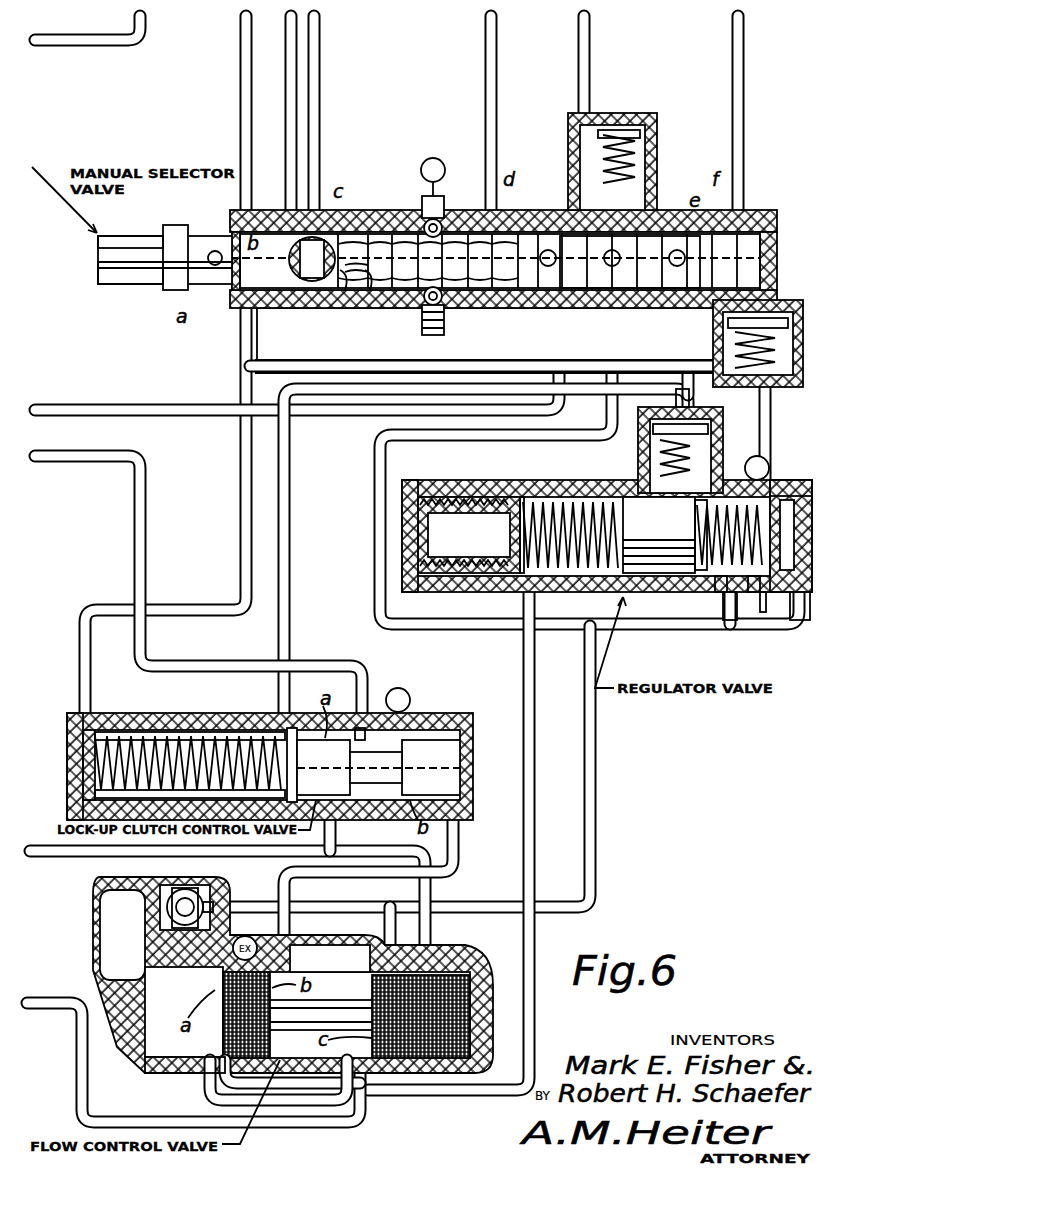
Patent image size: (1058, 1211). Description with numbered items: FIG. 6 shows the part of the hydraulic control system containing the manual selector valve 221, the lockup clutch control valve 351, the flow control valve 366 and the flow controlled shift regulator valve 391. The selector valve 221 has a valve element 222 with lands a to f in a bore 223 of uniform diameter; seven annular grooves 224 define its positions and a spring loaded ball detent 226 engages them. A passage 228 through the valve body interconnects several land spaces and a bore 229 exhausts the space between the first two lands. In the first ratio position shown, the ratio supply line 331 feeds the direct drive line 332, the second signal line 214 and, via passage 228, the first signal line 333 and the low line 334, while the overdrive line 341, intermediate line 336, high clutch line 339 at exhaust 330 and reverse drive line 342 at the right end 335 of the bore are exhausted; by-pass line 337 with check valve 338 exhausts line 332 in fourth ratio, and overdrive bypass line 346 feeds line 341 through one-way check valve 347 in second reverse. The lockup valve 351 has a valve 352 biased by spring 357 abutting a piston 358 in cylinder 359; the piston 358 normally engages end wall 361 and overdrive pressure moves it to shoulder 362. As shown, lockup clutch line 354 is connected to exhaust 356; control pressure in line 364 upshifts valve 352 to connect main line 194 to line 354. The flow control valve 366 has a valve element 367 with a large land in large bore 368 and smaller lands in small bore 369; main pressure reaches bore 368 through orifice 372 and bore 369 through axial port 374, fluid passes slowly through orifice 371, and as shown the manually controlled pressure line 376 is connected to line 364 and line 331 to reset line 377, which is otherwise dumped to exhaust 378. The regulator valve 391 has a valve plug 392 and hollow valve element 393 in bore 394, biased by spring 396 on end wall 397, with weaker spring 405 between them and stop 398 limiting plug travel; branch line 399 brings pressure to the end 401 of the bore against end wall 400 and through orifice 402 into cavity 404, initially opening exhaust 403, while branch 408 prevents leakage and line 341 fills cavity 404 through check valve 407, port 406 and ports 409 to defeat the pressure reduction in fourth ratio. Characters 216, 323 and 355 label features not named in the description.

The main line 194 is at (77, 853).
The second signal line 214 is at (76, 408).
The conduit 216 is at (142, 22).
The manual selector valve 221 is at (150, 286).
The valve element 222 is at (205, 232).
The bore 223 is at (522, 292).
The annular grooves 224 is at (372, 292).
The spring loaded ball detent 226 is at (422, 218).
The passage 228 is at (580, 248).
The bore 229 is at (148, 248).
The ball valve seat 323 is at (185, 890).
The exhaust 330 is at (448, 150).
The ratio supply line 331 is at (688, 345).
The direct drive line 332 is at (590, 22).
The first signal line 333 is at (660, 325).
The low line 334 is at (320, 80).
The right end of bore 335 is at (768, 262).
The intermediate line 336 is at (297, 36).
The by-pass line 337 is at (640, 203).
The check valve 338 is at (640, 160).
The high clutch line 339 is at (497, 20).
The overdrive line 341 is at (244, 55).
The reverse drive line 342 is at (744, 42).
The overdrive bypass line 346 is at (760, 300).
The one-way check valve 347 is at (770, 393).
The lockup clutch control valve 351 is at (430, 710).
The valve 352 is at (452, 760).
The lockup clutch line 354 is at (78, 460).
The port 355 is at (375, 728).
The exhaust 356 is at (402, 690).
The spring 357 is at (180, 732).
The piston 358 is at (102, 730).
The cylinder 359 is at (150, 732).
The end wall 361 is at (70, 800).
The shoulder 362 is at (225, 732).
The control pressure line 364 is at (455, 828).
The flow control valve 366 is at (502, 990).
The valve element 367 is at (468, 1030).
The large bore 368 is at (182, 1072).
The small bore 369 is at (300, 1063).
The orifice 371 is at (395, 944).
The orifice 372 is at (170, 904).
The axial port 374 is at (445, 1065).
The manually controlled pressure line 376 is at (34, 1010).
The reset line 377 is at (524, 612).
The exhaust 378 is at (218, 906).
The flow controlled regulator valve 391 is at (465, 476).
The valve plug 392 is at (630, 510).
The hollow valve element 393 is at (758, 625).
The bore 394 is at (555, 498).
The spring 396 is at (492, 498).
The end wall 397 is at (410, 498).
The stop 398 is at (469, 535).
The branch line 399 is at (795, 640).
The end wall 400 is at (762, 596).
The end of bore 401 is at (800, 600).
The orifice 402 is at (795, 492).
The exhaust 403 is at (757, 456).
The cavity 404 is at (708, 596).
The spring 405 is at (705, 528).
The passage 406 is at (660, 488).
The check valve 407 is at (637, 410).
The branch 408 is at (728, 622).
The full flow ports 409 is at (710, 506).